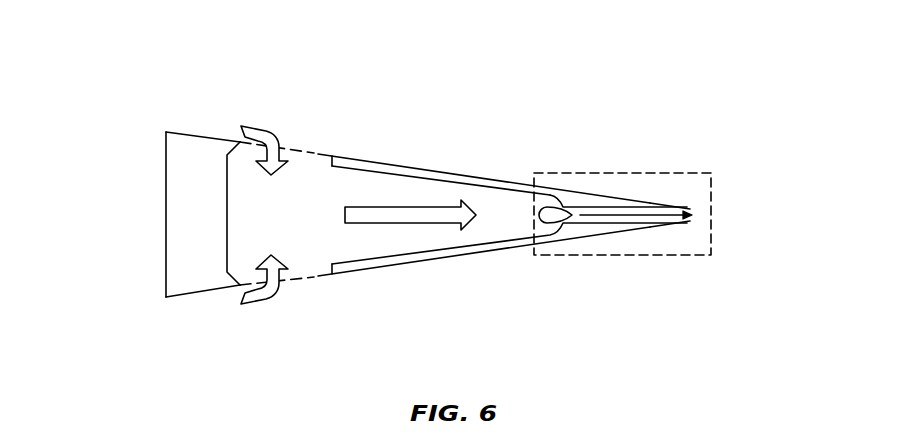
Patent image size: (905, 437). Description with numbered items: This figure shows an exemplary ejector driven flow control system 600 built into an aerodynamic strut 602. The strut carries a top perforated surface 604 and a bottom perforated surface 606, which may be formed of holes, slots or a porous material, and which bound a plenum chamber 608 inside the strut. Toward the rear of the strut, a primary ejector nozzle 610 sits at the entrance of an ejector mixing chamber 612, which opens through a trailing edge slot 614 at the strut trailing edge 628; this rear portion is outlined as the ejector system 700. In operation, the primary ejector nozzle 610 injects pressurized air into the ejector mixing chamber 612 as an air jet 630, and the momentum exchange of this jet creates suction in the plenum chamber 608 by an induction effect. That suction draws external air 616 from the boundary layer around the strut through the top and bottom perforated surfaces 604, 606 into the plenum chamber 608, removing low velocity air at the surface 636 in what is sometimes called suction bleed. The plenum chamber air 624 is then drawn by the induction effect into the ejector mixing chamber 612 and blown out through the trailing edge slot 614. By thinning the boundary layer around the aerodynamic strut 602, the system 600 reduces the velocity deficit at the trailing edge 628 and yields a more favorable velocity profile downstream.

The ejector driven flow control system 600 is at (128, 66).
The aerodynamic strut 602 is at (177, 240).
The surface 636 is at (200, 135).
The top perforated surface 604 is at (303, 150).
The bottom perforated surface 606 is at (302, 278).
The plenum chamber 608 is at (357, 193).
The external air 616 is at (257, 125).
The plenum chamber air 624 is at (443, 205).
The ejector mixing chamber 612 is at (600, 210).
The primary ejector nozzle 610 is at (547, 222).
The trailing edge slot 614 is at (700, 213).
The trailing edge 628 is at (693, 222).
The air jet 630 is at (623, 217).
The ejector system 700 is at (690, 172).